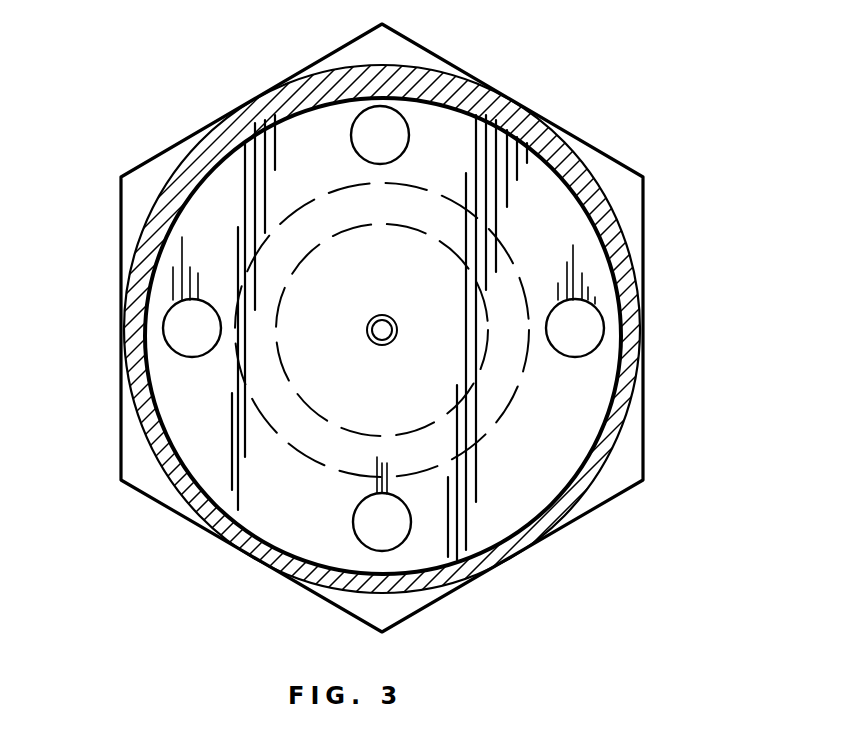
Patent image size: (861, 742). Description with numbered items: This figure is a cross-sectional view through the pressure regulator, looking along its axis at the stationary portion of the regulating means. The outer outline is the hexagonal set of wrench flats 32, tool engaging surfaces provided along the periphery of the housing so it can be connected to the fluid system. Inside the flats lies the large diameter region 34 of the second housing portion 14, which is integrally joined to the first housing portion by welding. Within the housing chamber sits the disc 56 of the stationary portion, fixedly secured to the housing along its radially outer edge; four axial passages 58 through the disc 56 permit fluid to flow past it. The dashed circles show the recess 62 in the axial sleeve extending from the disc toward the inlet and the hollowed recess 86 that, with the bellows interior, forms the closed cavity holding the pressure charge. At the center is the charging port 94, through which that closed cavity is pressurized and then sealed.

The second housing portion 14 is at (285, 90).
The wrench flats 32 is at (622, 168).
The large diameter region 34 is at (628, 253).
The disc 56 is at (227, 173).
The axial passages 58 is at (378, 124).
The recess 62 is at (505, 407).
The hollowed recess 86 is at (427, 233).
The charging port 94 is at (380, 333).